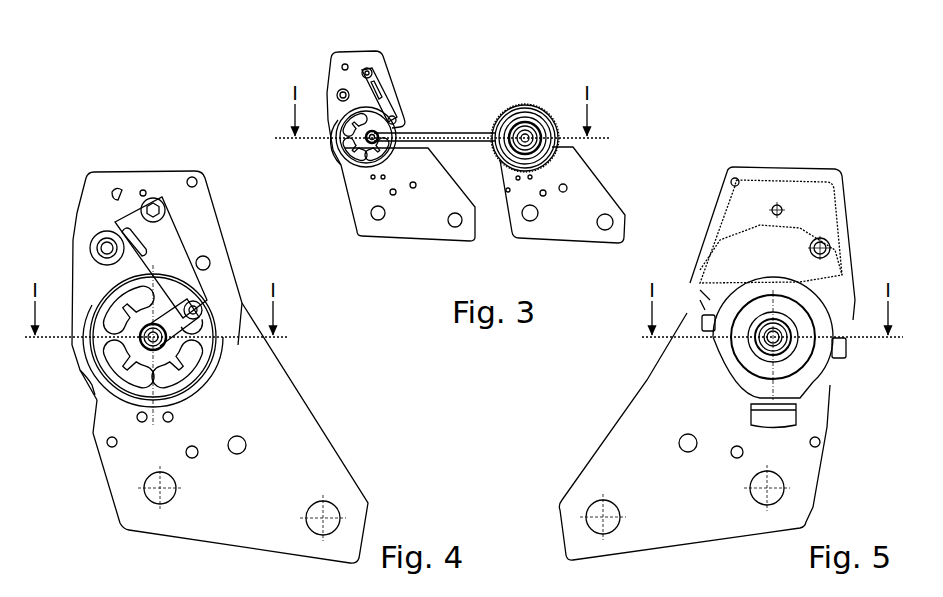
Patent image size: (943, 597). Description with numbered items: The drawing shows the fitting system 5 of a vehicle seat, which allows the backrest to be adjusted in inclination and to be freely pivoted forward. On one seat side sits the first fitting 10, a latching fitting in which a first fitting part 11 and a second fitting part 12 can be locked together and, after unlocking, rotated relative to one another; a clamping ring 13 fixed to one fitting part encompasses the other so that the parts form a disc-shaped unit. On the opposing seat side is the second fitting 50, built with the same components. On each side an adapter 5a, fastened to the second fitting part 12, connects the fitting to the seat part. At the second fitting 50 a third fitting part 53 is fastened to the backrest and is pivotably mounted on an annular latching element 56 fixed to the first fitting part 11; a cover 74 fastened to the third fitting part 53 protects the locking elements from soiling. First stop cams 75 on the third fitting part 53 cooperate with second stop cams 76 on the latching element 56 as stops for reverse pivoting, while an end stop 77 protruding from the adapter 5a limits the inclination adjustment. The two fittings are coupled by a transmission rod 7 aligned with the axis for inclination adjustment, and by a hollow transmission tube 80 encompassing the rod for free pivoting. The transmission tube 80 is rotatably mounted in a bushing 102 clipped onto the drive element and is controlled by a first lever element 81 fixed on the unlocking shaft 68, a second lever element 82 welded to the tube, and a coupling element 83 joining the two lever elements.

In FIG. 3, the fitting system 5 is at (464, 165).
In FIG. 3, the adapter 5a is at (415, 230).
In FIG. 4, the adapter 5a is at (313, 460).
In FIG. 5, the adapter 5a is at (620, 452).
In FIG. 3, the transmission rod 7 is at (537, 138).
In FIG. 4, the transmission rod 7 is at (167, 340).
In FIG. 5, the transmission rod 7 is at (772, 338).
In FIG. 3, the first fitting 10 is at (528, 100).
In FIG. 3, the first fitting part 11 is at (533, 120).
In FIG. 3, the second fitting part 12 is at (343, 143).
In FIG. 4, the second fitting part 12 is at (100, 323).
In FIG. 3, the clamping ring 13 is at (512, 107).
In FIG. 3, the second fitting 50 is at (404, 100).
In FIG. 4, the second fitting 50 is at (215, 373).
In FIG. 5, the second fitting 50 is at (843, 383).
In FIG. 3, the third fitting part 53 is at (338, 72).
In FIG. 3, the latching element 56 is at (340, 163).
In FIG. 4, the latching element 56 is at (92, 382).
In FIG. 5, the latching element 56 is at (833, 370).
In FIG. 3, the unlocking shaft 68 is at (370, 75).
In FIG. 4, the unlocking shaft 68 is at (154, 222).
In FIG. 5, the cover 74 is at (793, 200).
In FIG. 4, the first stop cam 75 is at (83, 335).
In FIG. 5, the second stop cam 76 is at (708, 327).
In FIG. 5, the end stop 77 is at (763, 412).
In FIG. 3, the transmission tube 80 is at (455, 135).
In FIG. 4, the transmission tube 80 is at (142, 343).
In FIG. 3, the first lever element 81 is at (358, 72).
In FIG. 4, the first lever element 81 is at (140, 213).
In FIG. 3, the second lever element 82 is at (393, 123).
In FIG. 4, the second lever element 82 is at (178, 325).
In FIG. 3, the coupling element 83 is at (375, 103).
In FIG. 4, the coupling element 83 is at (162, 262).
In FIG. 3, the bushing 102 is at (372, 142).